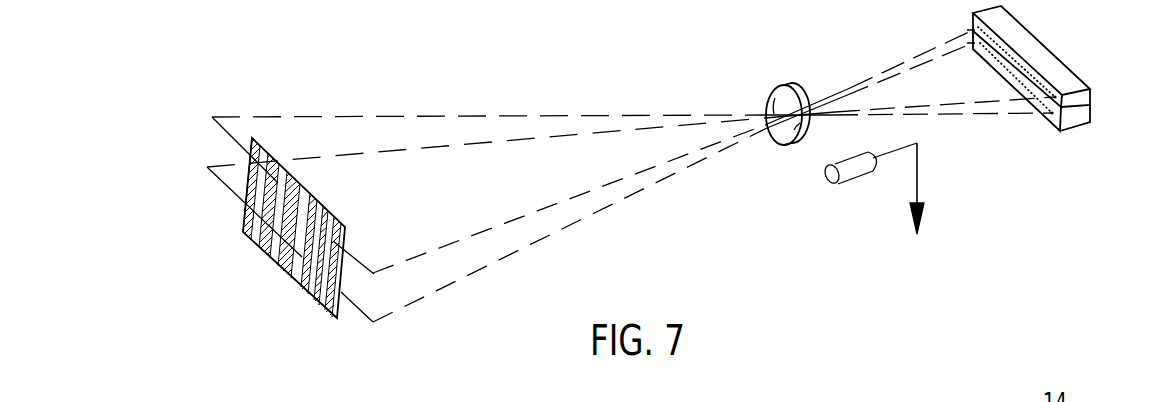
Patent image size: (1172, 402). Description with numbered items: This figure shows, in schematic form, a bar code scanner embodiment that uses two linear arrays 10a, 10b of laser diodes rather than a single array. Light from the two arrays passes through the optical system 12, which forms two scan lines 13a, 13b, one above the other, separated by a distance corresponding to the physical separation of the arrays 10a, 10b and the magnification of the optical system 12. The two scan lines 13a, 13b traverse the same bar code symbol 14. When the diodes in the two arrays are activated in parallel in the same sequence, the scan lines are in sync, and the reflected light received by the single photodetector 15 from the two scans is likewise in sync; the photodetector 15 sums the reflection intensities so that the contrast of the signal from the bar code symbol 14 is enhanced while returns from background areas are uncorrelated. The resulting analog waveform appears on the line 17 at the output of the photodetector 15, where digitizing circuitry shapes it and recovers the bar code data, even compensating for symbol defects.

The linear array 10a is at (1033, 57).
The linear array 10b is at (1073, 118).
The optical system 12 is at (790, 83).
The scan line 13a is at (233, 192).
The scan line 13b is at (222, 128).
The bar code symbol 14 is at (282, 265).
The photodetector 15 is at (848, 182).
The line 17 is at (918, 180).